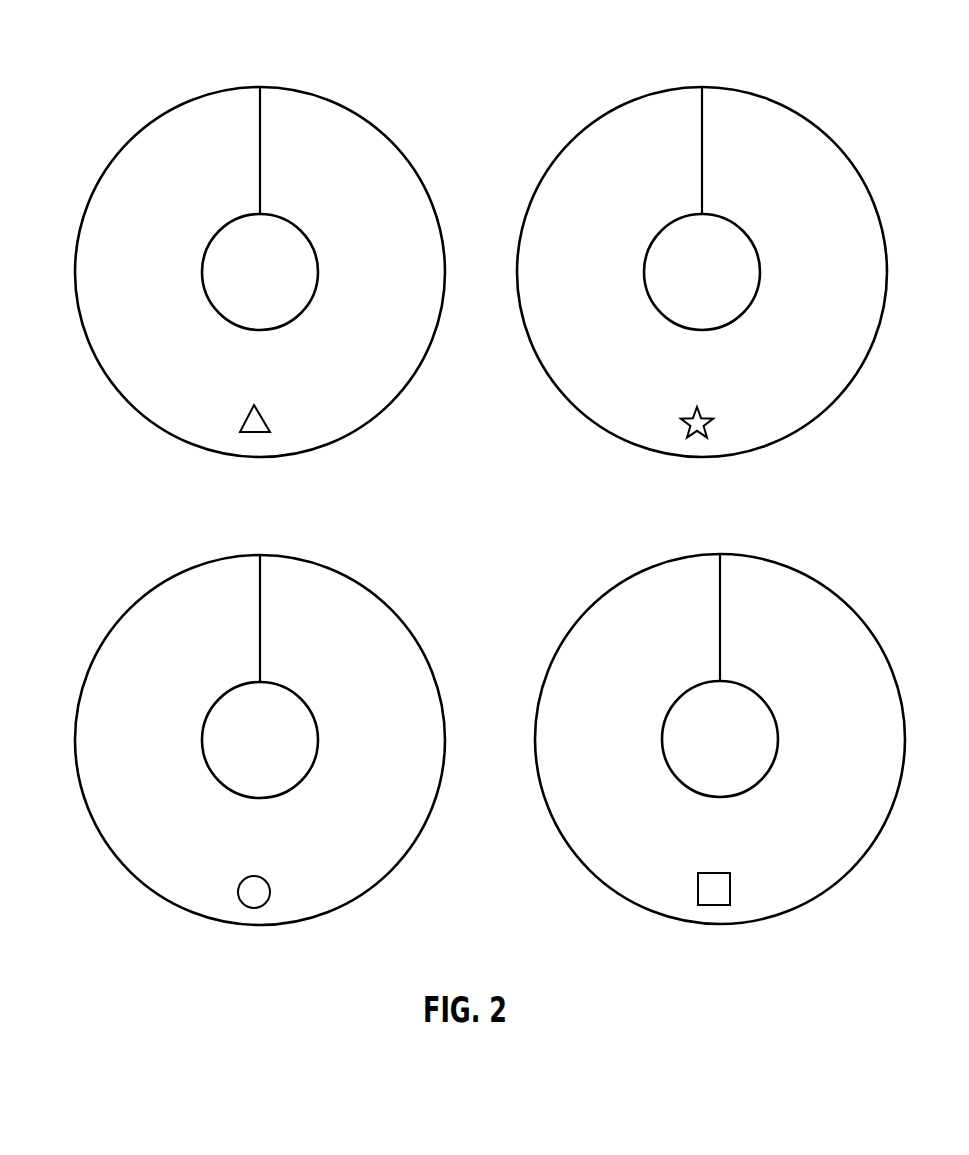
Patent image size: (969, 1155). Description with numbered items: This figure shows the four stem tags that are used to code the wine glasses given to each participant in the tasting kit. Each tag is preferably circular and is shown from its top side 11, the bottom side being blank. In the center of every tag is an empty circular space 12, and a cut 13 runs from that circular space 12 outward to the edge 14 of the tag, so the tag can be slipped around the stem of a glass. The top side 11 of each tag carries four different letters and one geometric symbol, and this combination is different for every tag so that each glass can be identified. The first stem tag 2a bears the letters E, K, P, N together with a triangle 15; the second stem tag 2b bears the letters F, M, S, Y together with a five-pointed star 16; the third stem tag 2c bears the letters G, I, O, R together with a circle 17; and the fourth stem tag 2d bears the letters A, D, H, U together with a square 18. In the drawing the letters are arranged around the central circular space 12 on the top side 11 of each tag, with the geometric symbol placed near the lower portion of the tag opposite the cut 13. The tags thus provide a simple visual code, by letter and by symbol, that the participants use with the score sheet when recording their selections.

The first stem tag 2a is at (107, 168).
The second stem tag 2b is at (560, 157).
The third stem tag 2c is at (105, 640).
The fourth stem tag 2d is at (585, 617).
The top side 11 is at (297, 115).
The empty circular space 12 is at (293, 255).
The cut 13 is at (745, 580).
The edge 14 is at (425, 353).
The triangle 15 is at (266, 420).
The five-pointed star 16 is at (707, 413).
The circle 17 is at (268, 880).
The square 18 is at (710, 873).